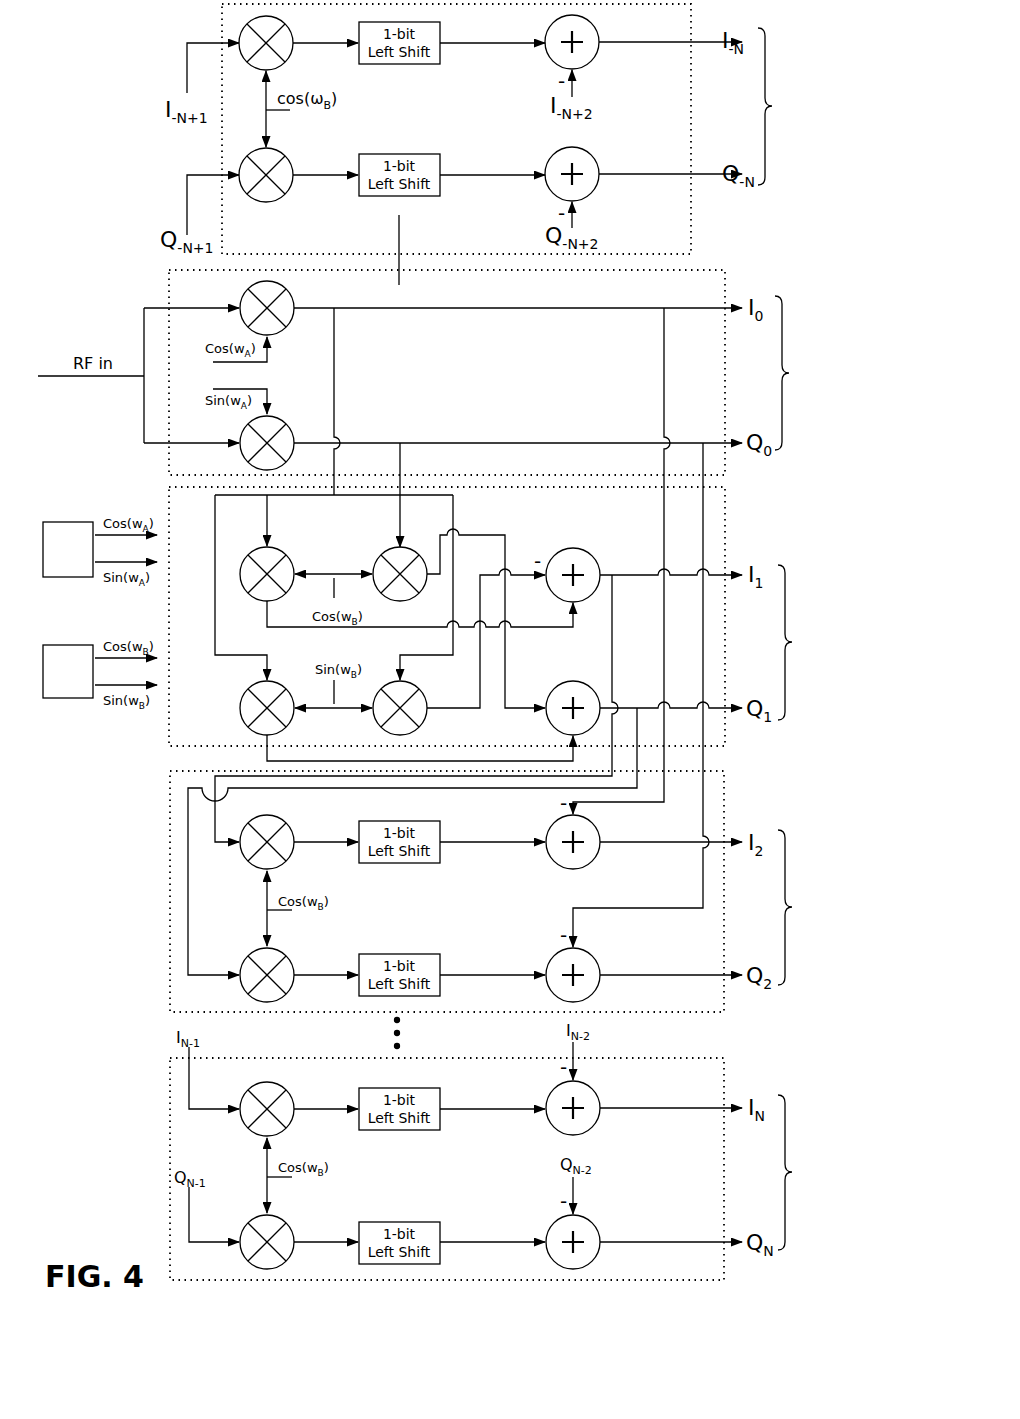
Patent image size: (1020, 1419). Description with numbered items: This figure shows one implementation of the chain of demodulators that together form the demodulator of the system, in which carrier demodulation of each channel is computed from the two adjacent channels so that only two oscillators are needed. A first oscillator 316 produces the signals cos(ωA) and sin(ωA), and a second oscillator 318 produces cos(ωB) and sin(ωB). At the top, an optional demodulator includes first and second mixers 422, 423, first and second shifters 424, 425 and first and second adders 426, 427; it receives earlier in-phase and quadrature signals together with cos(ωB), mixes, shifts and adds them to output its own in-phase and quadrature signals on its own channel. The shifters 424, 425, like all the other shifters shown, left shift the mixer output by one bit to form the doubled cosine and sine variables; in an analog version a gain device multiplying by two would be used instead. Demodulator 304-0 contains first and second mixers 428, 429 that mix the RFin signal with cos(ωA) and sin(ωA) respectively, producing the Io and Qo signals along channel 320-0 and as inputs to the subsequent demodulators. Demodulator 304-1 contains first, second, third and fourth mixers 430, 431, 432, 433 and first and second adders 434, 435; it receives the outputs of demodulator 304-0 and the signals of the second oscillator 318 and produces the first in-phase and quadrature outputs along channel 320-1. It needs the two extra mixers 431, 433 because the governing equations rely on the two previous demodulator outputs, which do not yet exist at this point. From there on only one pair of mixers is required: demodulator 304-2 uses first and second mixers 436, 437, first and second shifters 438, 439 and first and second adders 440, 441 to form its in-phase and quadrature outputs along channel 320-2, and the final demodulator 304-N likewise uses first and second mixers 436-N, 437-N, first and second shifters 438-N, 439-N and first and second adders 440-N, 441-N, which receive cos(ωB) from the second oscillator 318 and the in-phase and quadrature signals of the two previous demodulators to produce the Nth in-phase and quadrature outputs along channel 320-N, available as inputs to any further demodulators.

The first mixer 422 is at (292, 35).
The second mixer 423 is at (292, 167).
The first shifter 424 is at (398, 64).
The second shifter 425 is at (430, 196).
The first adder 426 is at (596, 31).
The second adder 427 is at (596, 163).
The demodulator 304-0 is at (725, 283).
The first mixer 428 is at (294, 300).
The second mixer 429 is at (243, 459).
The channel 320-0 is at (816, 373).
The first oscillator 316 is at (48, 522).
The second oscillator 318 is at (48, 645).
The demodulator 304-1 is at (725, 512).
The first mixer 430 is at (294, 566).
The second mixer 431 is at (408, 548).
The third mixer 432 is at (275, 682).
The fourth mixer 433 is at (420, 690).
The first adder 434 is at (582, 548).
The second adder 435 is at (568, 681).
The channel 320-1 is at (818, 642).
The demodulator 304-2 is at (724, 808).
The first mixer 436 is at (290, 859).
The second mixer 437 is at (291, 957).
The first shifter 438 is at (425, 863).
The second shifter 439 is at (425, 954).
The first adder 440 is at (594, 860).
The second adder 441 is at (597, 956).
The channel 320-2 is at (818, 907).
The demodulator 304-N is at (724, 1088).
The first mixer 436-N is at (290, 1126).
The second mixer 437-N is at (291, 1224).
The first shifter 438-N is at (420, 1130).
The second shifter 439-N is at (422, 1222).
The first adder 440-N is at (598, 1100).
The second adder 441-N is at (598, 1234).
The channel 320-N is at (819, 1172).